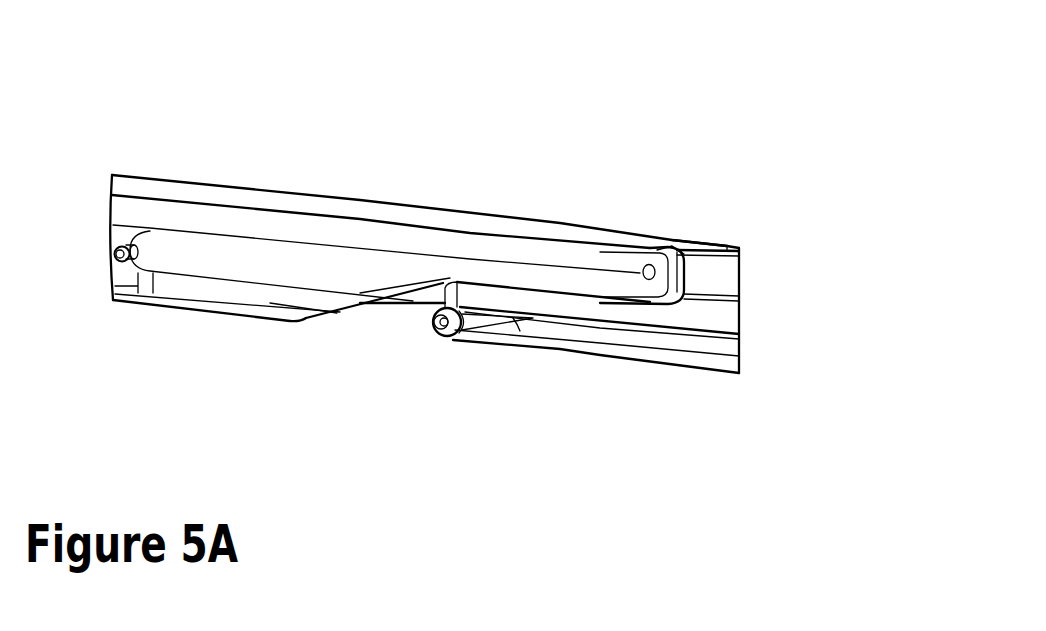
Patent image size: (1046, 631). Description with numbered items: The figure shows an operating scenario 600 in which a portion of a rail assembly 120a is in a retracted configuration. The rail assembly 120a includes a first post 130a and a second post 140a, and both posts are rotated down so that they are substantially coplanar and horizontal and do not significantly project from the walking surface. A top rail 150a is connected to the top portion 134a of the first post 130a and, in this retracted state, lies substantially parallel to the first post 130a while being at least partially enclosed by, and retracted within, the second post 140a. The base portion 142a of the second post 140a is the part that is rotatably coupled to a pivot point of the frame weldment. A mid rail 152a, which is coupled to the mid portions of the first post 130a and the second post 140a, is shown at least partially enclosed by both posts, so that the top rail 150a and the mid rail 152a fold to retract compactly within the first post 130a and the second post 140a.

The operating scenario 600 is at (830, 89).
The rail assembly 120a is at (564, 153).
The first post 130a is at (355, 199).
The top portion of the first post 134a is at (643, 234).
The top rail 150a is at (723, 248).
The second post 140a is at (603, 357).
The base portion of the second post 142a is at (463, 338).
The mid rail 152a is at (413, 303).